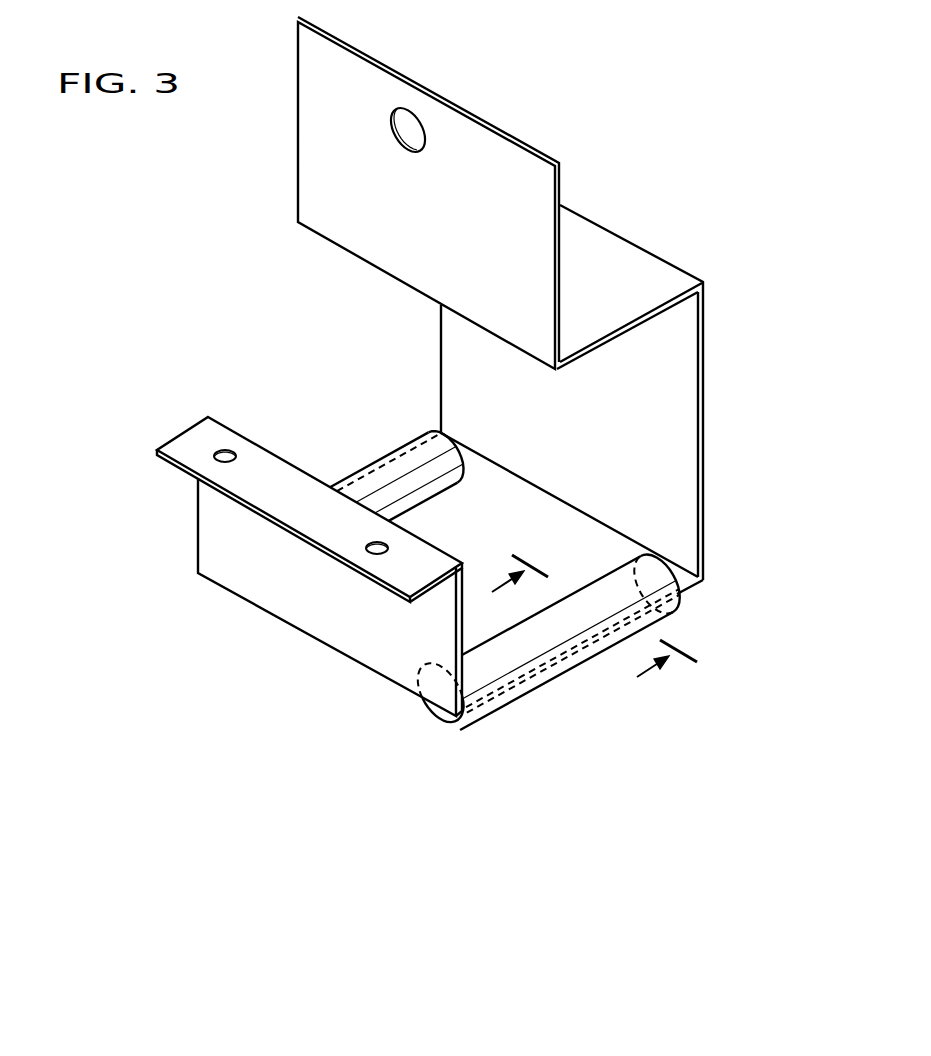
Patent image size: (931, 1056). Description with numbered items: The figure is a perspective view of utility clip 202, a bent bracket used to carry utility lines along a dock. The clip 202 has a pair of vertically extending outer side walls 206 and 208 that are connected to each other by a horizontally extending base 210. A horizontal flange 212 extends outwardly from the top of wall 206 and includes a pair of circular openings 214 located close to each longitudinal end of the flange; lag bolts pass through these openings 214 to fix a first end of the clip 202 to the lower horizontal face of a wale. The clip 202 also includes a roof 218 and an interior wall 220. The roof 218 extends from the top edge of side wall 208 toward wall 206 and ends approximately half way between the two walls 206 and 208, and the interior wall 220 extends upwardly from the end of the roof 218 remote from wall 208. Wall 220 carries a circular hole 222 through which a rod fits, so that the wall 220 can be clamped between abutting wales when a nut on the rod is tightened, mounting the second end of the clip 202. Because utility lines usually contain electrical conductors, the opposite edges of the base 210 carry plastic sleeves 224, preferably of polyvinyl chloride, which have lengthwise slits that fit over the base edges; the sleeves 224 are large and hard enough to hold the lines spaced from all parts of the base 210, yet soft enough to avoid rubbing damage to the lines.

The clip 202 is at (213, 602).
The outer side wall 206 is at (310, 608).
The outer side wall 208 is at (706, 428).
The base 210 is at (690, 591).
The horizontal flange 212 is at (187, 443).
The circular openings 214 is at (367, 543).
The roof 218 is at (667, 295).
The interior wall 220 is at (562, 187).
The circular hole 222 is at (408, 123).
The plastic sleeves 224 is at (420, 458).